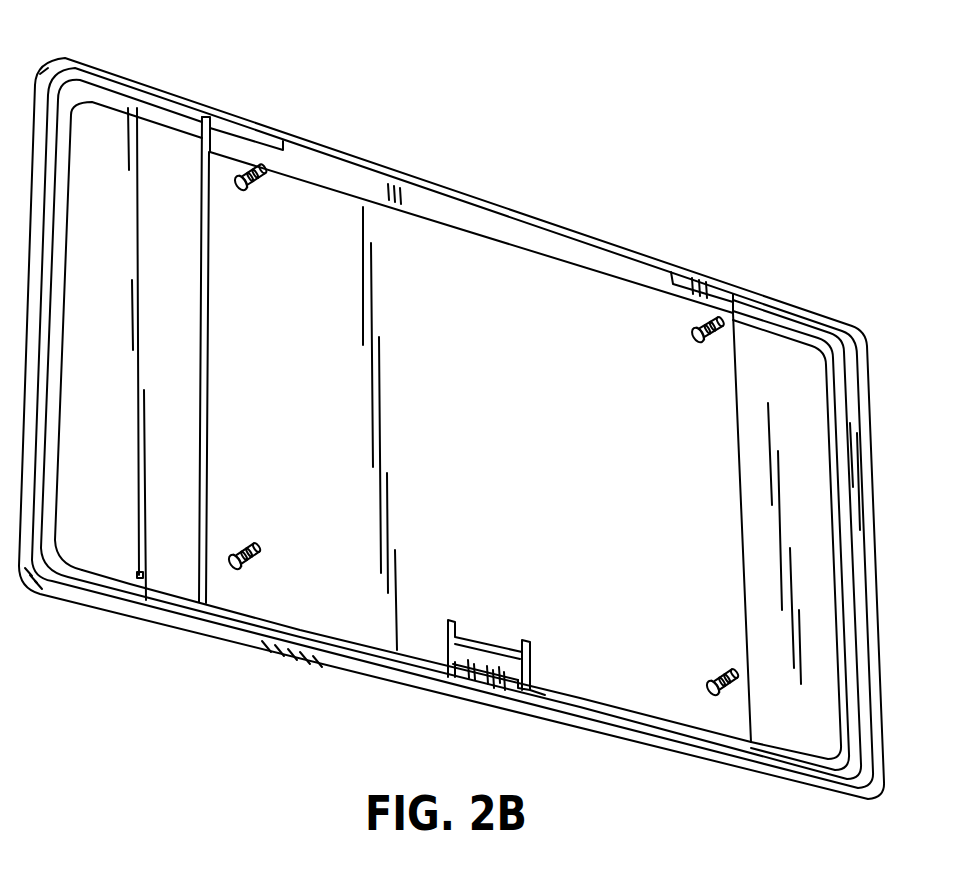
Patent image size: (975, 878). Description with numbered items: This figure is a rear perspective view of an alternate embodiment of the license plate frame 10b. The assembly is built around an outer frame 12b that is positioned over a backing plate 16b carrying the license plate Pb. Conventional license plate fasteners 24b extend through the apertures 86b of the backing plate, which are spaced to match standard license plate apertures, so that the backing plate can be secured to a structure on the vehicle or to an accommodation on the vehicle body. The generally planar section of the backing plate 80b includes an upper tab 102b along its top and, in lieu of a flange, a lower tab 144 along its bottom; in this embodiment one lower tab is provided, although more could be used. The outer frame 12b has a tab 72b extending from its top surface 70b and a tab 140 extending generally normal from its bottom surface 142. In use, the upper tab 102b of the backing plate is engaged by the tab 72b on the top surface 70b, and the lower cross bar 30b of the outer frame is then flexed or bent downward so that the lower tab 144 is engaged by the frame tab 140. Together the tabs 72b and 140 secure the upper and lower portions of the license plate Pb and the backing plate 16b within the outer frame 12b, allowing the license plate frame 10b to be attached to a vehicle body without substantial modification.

The license plate frame 10b is at (605, 123).
The outer frame 12b is at (183, 86).
The backing plate 16b is at (738, 365).
The license plate Pb is at (802, 417).
The license plate fastener 24b is at (261, 533).
The aperture 86b is at (250, 190).
The lower cross bar 30b is at (213, 640).
The top surface 70b is at (426, 176).
The tab 72b is at (261, 137).
The backing plate 80b is at (583, 293).
The upper tab 102b is at (490, 228).
The tab 140 is at (470, 673).
The bottom surface 142 is at (350, 667).
The lower tab 144 is at (500, 665).